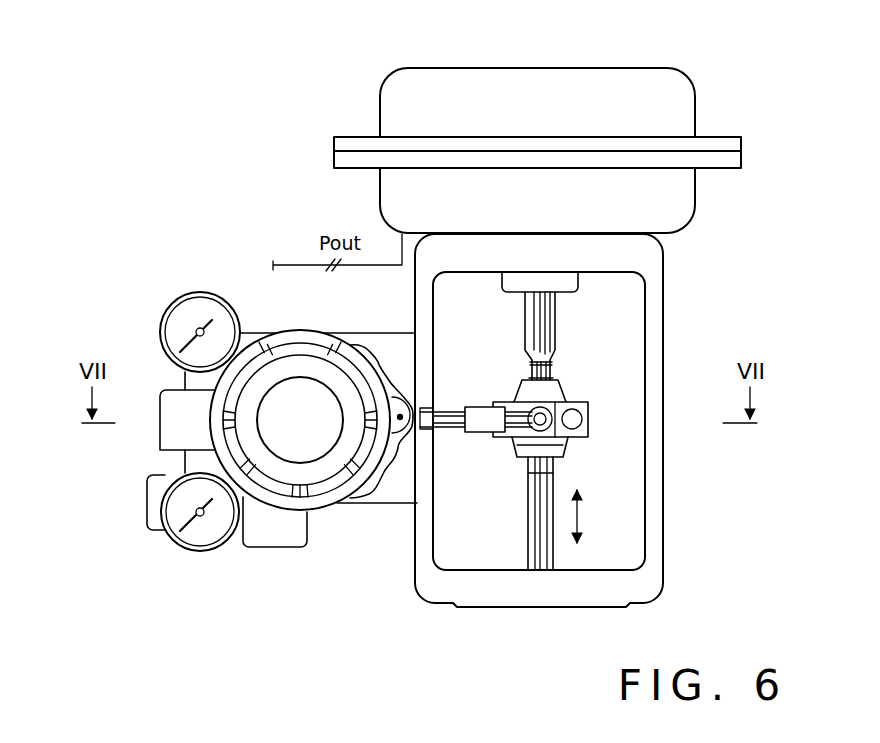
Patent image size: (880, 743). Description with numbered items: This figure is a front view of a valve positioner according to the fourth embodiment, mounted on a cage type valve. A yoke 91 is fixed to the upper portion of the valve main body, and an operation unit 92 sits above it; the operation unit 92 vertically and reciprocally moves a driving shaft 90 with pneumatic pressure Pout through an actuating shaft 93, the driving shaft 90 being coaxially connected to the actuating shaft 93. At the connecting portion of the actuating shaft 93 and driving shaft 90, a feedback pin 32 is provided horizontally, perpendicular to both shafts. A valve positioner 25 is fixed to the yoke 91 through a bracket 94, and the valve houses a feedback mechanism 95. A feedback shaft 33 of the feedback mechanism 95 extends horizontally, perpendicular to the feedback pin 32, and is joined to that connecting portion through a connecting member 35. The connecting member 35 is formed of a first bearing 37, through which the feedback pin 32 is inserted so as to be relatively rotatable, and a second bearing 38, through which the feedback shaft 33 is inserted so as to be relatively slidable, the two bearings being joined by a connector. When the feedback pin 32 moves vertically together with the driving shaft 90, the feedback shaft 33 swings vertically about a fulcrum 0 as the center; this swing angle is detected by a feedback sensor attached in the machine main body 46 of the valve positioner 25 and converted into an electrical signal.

The operation unit 92 is at (670, 68).
The actuating shaft 93 is at (550, 315).
The feedback mechanism 95 is at (597, 392).
The second bearing 38 is at (478, 405).
The first bearing 37 is at (533, 410).
The feedback pin 32 is at (533, 450).
The feedback shaft 33 is at (451, 430).
The connecting member 35 is at (486, 441).
The valve positioner 25 is at (286, 434).
The machine main body 46 is at (332, 492).
The bracket 94 is at (388, 505).
The driving shaft 90 is at (533, 552).
The yoke 91 is at (660, 568).
The fulcrum 0 is at (400, 415).